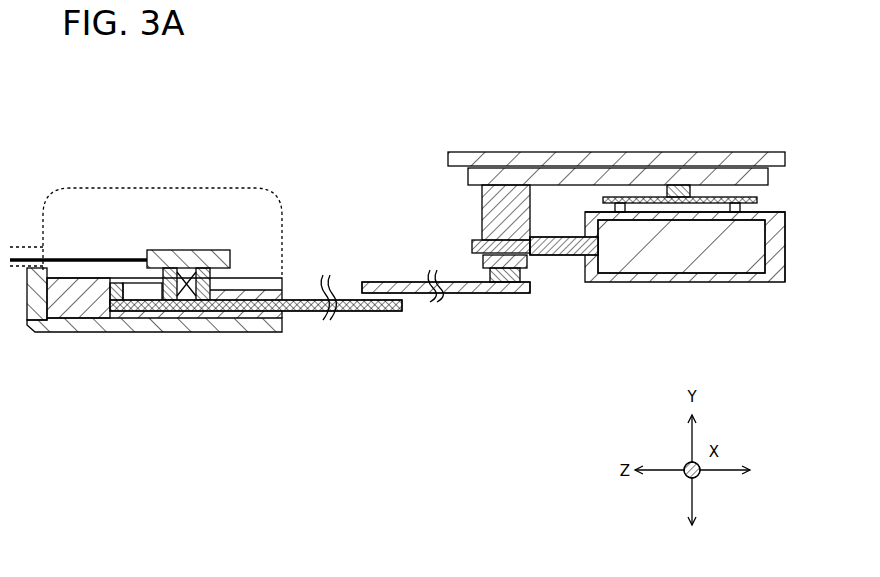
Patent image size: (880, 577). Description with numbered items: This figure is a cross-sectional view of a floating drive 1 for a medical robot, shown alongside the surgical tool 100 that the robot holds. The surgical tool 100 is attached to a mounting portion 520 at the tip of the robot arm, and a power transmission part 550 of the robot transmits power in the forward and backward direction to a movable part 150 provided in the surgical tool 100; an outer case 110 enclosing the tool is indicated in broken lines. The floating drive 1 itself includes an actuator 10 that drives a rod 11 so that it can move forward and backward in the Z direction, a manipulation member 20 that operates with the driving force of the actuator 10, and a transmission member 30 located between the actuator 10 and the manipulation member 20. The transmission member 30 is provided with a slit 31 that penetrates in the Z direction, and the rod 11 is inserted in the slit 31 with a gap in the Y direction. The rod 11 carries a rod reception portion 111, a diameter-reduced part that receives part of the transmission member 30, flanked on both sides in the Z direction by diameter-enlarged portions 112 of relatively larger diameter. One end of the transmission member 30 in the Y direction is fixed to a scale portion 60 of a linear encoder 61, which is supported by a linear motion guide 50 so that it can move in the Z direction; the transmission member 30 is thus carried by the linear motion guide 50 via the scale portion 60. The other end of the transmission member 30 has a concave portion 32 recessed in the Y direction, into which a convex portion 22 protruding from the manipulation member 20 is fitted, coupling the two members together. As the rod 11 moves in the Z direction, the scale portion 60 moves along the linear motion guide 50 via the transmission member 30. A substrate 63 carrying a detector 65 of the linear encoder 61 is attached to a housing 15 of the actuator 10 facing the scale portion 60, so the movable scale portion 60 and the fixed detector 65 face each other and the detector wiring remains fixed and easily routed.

The floating drive 1 is at (503, 105).
The actuator 10 is at (662, 265).
The rod 11 is at (572, 258).
The housing 15 is at (772, 212).
The manipulation member 20 is at (470, 295).
The convex portion 22 is at (508, 285).
The transmission member 30 is at (482, 212).
The slit 31 is at (532, 232).
The concave portion 32 is at (484, 272).
The linear motion guide 50 is at (600, 153).
The scale portion 60 is at (640, 175).
The linear encoder 61 is at (705, 200).
The substrate 63 is at (736, 200).
The detector 65 is at (678, 190).
The surgical tool 100 is at (185, 186).
The outer case 110 is at (117, 183).
The rod reception portion 111 is at (534, 258).
The diameter-enlarged portions 112 is at (472, 246).
The movable part 150 is at (220, 252).
The mounting portion 520 is at (106, 325).
The power transmission part 550 is at (310, 302).